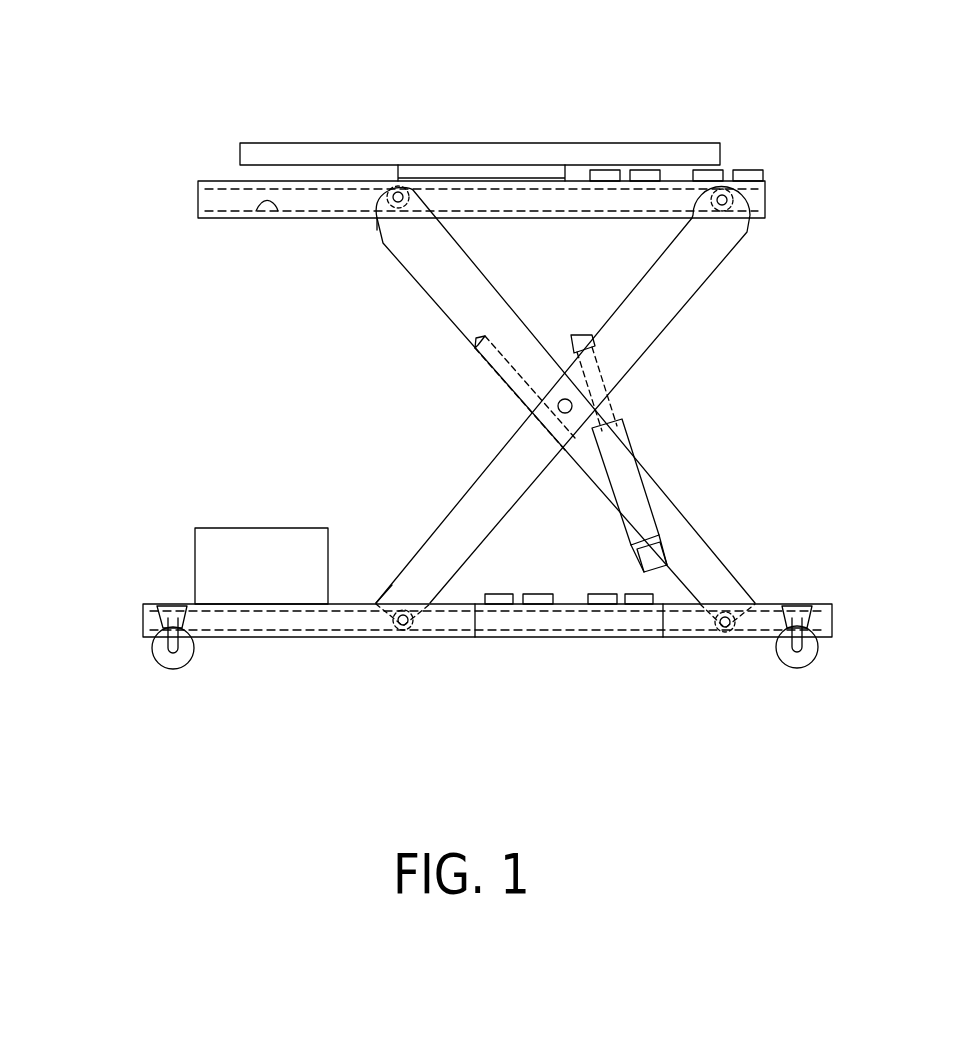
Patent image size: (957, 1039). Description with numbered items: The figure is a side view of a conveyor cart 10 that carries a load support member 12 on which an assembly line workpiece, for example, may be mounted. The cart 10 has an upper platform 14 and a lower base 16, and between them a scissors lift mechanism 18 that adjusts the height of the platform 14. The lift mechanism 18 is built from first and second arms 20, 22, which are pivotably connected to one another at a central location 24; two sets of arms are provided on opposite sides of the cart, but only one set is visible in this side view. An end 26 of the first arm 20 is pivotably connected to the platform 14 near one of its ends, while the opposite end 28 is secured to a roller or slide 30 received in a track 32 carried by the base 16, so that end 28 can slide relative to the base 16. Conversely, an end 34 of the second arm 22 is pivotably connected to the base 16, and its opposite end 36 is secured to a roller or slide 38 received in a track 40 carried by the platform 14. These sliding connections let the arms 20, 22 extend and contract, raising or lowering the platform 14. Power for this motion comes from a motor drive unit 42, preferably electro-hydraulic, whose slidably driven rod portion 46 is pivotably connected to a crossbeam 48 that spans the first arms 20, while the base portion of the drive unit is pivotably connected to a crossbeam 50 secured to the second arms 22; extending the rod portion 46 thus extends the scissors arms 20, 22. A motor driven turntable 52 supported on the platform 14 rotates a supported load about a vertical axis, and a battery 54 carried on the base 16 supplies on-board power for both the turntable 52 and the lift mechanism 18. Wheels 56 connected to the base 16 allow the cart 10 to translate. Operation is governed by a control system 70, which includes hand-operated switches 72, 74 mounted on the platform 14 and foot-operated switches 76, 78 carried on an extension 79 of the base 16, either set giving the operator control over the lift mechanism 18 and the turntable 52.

The conveyor cart 10 is at (190, 105).
The load support member 12 is at (280, 152).
The platform 14 is at (198, 205).
The base 16 is at (152, 628).
The scissors lift mechanism 18 is at (735, 318).
The first arms 20 is at (632, 346).
The second arms 22 is at (672, 500).
The central location 24 is at (557, 407).
The end of first arm 26 is at (738, 230).
The opposite end of first arm 28 is at (398, 587).
The roller or slide 30 is at (403, 630).
The track 32 is at (268, 623).
The end of second arm 34 is at (737, 585).
The opposite end of second arm 36 is at (383, 243).
The roller or slide 38 is at (433, 213).
The track 40 is at (265, 206).
The motor drive unit 42 is at (623, 423).
The rod portion 46 is at (607, 420).
The crossbeam 48 is at (578, 334).
The crossbeam 50 is at (664, 562).
The motor driven turntable 52 is at (480, 170).
The battery 54 is at (272, 552).
The wheels 56 is at (155, 667).
The control system 70 is at (812, 172).
The hand-operated switch 72 is at (645, 170).
The hand-operated switch 74 is at (748, 170).
The foot-operated switch 76 is at (503, 605).
The foot-operated switch 78 is at (637, 606).
The extension 79 is at (568, 622).